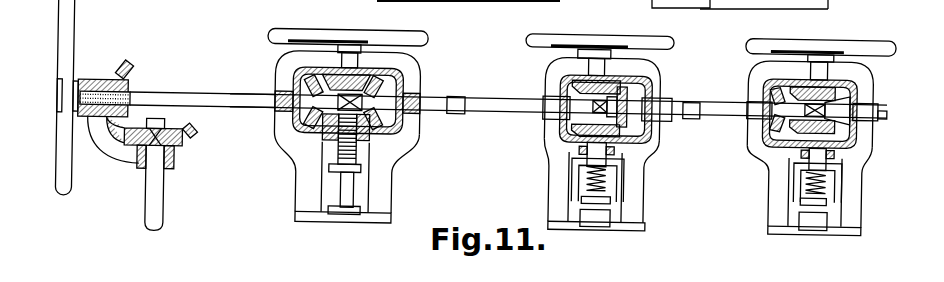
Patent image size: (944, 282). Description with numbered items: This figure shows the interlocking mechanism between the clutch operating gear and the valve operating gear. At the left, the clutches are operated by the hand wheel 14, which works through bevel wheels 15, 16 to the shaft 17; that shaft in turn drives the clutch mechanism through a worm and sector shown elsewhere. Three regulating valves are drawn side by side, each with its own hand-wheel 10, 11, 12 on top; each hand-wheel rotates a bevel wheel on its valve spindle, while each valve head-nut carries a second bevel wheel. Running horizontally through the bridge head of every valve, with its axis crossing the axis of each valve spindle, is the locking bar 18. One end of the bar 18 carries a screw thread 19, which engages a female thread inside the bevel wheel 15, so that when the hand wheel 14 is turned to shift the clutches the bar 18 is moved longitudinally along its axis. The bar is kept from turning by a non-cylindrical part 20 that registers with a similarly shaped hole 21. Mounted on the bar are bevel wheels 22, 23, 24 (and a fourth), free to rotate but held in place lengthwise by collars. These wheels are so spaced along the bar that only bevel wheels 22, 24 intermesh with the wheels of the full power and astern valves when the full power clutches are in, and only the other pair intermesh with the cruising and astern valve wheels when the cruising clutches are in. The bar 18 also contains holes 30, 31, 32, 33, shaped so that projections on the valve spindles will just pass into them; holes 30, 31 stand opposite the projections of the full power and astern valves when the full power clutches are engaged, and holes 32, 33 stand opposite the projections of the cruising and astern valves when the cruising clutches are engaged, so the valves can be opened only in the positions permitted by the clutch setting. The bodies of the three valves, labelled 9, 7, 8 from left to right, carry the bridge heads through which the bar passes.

The valve body (second valve) 7 is at (617, 144).
The valve body (third valve) 8 is at (822, 149).
The valve body (first valve) 9 is at (362, 138).
The regulating valve hand-wheel 10 is at (600, 46).
The regulating valve hand-wheel 11 is at (821, 40).
The regulating valve hand-wheel 12 is at (350, 38).
The hand wheel 14 is at (70, 23).
The bevel wheel 15 is at (124, 64).
The bevel wheel 16 is at (190, 136).
The shaft 17 is at (165, 213).
The locking bar 18 is at (250, 100).
The screw thread 19 is at (132, 95).
The non-cylindrical part 20 is at (899, 123).
The hole 21 is at (873, 128).
The bevel wheel 22 is at (665, 136).
The bevel wheel 23 is at (753, 136).
The bevel wheel 24 is at (391, 121).
The hole 30 is at (565, 98).
The hole 31 is at (312, 149).
The hole 32 is at (825, 60).
The hole 33 is at (302, 87).